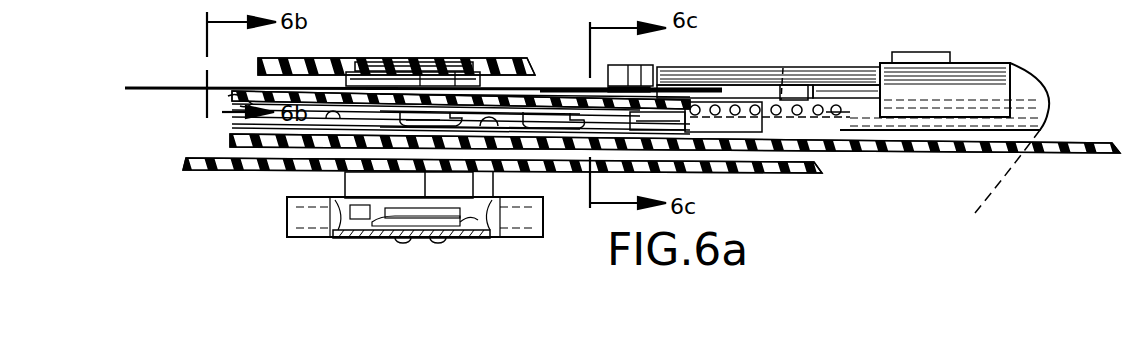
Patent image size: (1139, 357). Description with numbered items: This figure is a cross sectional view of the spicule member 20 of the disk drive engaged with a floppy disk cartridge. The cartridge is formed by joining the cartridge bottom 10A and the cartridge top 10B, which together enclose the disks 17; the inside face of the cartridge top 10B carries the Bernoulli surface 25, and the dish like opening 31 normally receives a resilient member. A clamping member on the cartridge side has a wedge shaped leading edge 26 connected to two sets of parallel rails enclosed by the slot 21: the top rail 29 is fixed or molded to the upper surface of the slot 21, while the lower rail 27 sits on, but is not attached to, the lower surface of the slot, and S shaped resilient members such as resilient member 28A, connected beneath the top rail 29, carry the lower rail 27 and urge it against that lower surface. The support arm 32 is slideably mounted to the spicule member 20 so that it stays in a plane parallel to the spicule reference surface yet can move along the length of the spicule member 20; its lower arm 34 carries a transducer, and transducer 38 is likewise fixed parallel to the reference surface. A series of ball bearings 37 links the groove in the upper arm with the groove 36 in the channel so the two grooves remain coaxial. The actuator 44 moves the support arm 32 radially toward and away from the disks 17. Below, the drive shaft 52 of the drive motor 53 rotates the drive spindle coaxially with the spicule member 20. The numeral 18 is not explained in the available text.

The disks 17 is at (138, 87).
The cartridge bottom 10A is at (328, 58).
The cartridge top 10B is at (222, 113).
The dish like opening 31 is at (396, 64).
The connector block 18 is at (440, 73).
The surface 25 is at (228, 100).
The wedge shaped leading edge 26 is at (330, 124).
The top rail 29 is at (492, 126).
The lower rail 27 is at (533, 128).
The S shaped resilient member 28A is at (640, 130).
The transducer 38 is at (632, 70).
The lower arm 34 is at (745, 75).
The ball bearings 37 is at (783, 66).
The support arm 32 is at (860, 72).
The actuator 44 is at (1012, 63).
The slot 21 is at (740, 132).
The spicule member 20 is at (806, 118).
The groove 36 is at (832, 118).
The drive motor 53 is at (262, 218).
The drive shaft 52 is at (368, 238).